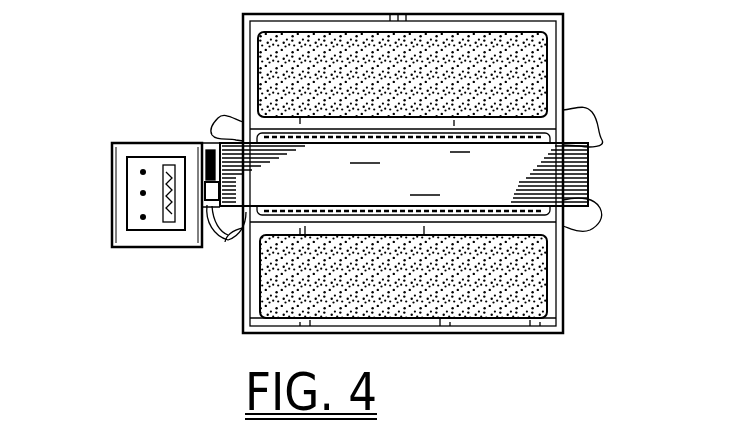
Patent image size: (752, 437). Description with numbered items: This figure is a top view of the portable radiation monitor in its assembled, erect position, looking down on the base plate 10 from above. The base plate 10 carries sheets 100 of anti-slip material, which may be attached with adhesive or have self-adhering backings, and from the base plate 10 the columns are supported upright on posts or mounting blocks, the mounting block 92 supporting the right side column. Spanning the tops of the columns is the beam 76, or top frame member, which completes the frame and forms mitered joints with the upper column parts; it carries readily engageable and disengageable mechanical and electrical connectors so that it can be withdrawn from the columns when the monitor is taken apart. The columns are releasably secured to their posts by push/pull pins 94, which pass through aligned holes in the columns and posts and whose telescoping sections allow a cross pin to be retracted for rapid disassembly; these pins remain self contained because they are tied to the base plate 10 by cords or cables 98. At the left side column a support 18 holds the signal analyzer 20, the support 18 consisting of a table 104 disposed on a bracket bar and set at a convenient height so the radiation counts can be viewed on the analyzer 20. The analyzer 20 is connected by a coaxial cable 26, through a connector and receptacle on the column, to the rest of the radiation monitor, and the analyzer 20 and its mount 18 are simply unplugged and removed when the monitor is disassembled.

The base plate 10 is at (453, 327).
The support 18 is at (120, 198).
The signal analyzer 20 is at (152, 163).
The coaxial cable 26 is at (213, 240).
The beam 76 is at (495, 153).
The mounting block 92 is at (592, 172).
The push/pull pins 94 is at (213, 178).
The cords or cables 98 is at (233, 118).
The sheets of anti-slip material 100 is at (523, 31).
The table 104 is at (120, 166).